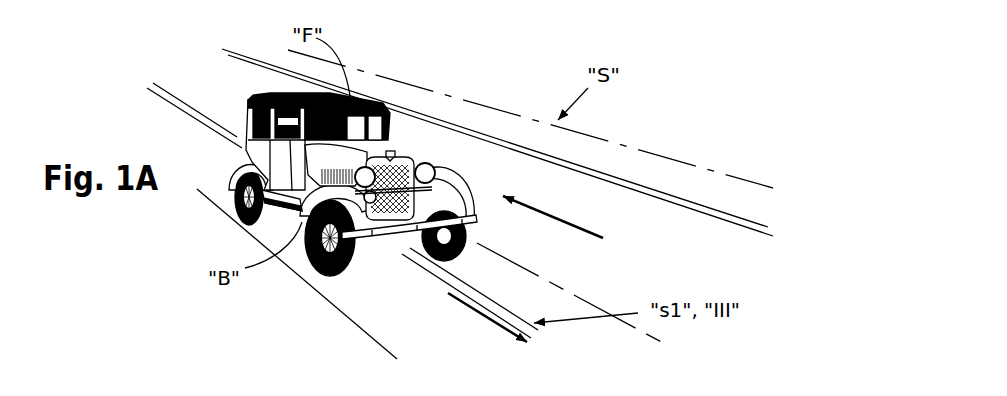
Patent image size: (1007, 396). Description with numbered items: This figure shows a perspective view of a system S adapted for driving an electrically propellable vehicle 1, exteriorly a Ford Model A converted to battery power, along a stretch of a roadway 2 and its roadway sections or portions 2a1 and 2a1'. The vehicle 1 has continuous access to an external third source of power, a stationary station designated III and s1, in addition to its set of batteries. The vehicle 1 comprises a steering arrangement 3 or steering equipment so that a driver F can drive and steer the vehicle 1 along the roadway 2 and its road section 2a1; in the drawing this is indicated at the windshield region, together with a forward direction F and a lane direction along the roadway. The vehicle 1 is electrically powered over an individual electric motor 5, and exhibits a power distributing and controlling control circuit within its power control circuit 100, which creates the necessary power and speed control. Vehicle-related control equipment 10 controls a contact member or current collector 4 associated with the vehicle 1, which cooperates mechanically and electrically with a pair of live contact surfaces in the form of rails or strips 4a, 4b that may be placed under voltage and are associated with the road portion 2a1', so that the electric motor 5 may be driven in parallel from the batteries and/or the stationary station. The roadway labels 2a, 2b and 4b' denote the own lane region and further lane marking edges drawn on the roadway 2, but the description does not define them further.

The vehicle 1 is at (245, 120).
The roadway 2 is at (398, 297).
The own traffic lane 2a is at (564, 371).
The roadway section 2a1 is at (470, 300).
The roadway section 2a1' is at (497, 142).
The opposite traffic lane 2b is at (287, 73).
The steering arrangement 3 is at (399, 127).
The current collector 4 is at (378, 243).
The rail or strip 4a is at (742, 228).
The rail or strip 4b is at (791, 204).
The outer edge of own lane marking 4b' is at (516, 301).
The electric motor 5 is at (408, 150).
The control equipment 10 is at (270, 213).
The power control circuit 100 is at (393, 218).